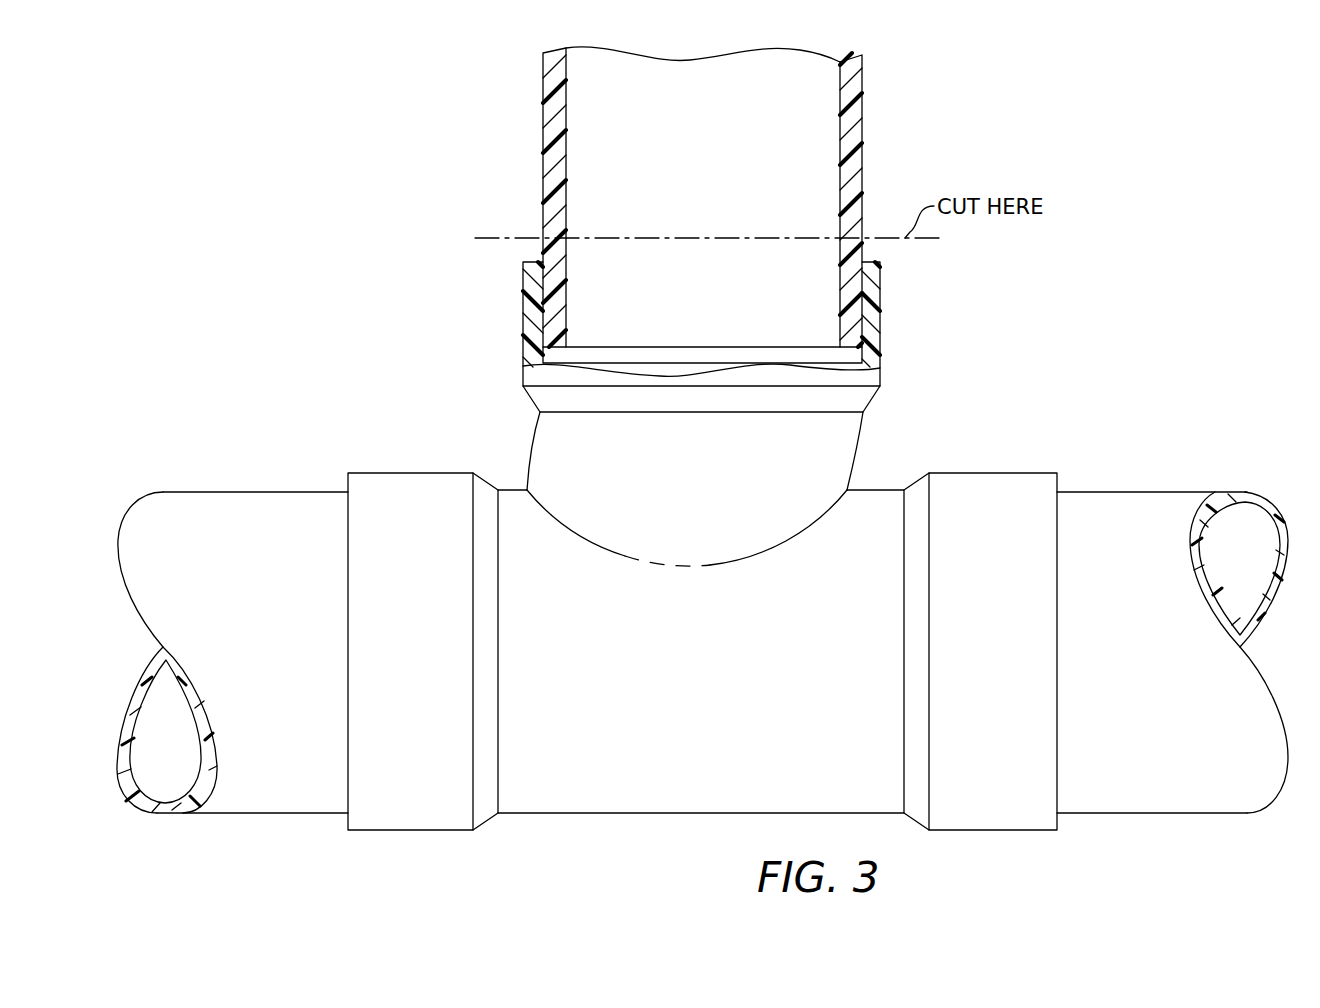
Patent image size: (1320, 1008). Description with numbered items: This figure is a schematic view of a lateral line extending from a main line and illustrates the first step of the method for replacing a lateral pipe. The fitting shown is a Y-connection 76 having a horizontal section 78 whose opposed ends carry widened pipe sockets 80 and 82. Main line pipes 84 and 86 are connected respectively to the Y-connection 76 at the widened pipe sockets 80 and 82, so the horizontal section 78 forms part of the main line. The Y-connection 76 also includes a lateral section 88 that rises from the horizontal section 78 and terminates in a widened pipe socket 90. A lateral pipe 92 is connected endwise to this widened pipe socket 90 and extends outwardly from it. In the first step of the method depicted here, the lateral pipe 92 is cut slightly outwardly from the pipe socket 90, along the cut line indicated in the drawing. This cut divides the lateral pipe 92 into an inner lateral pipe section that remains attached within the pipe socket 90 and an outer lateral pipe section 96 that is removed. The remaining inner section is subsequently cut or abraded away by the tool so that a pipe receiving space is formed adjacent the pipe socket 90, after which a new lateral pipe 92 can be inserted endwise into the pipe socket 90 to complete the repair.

The Y-connection 76 is at (896, 455).
The horizontal section 78 is at (668, 813).
The widened pipe socket 80 is at (407, 473).
The widened pipe socket 82 is at (993, 473).
The main line pipe 84 is at (238, 490).
The main line pipe 86 is at (1120, 813).
The lateral section 88 is at (866, 425).
The widened pipe socket 90 is at (880, 300).
The lateral pipe 92 is at (872, 150).
The outer lateral pipe section 96 is at (543, 145).